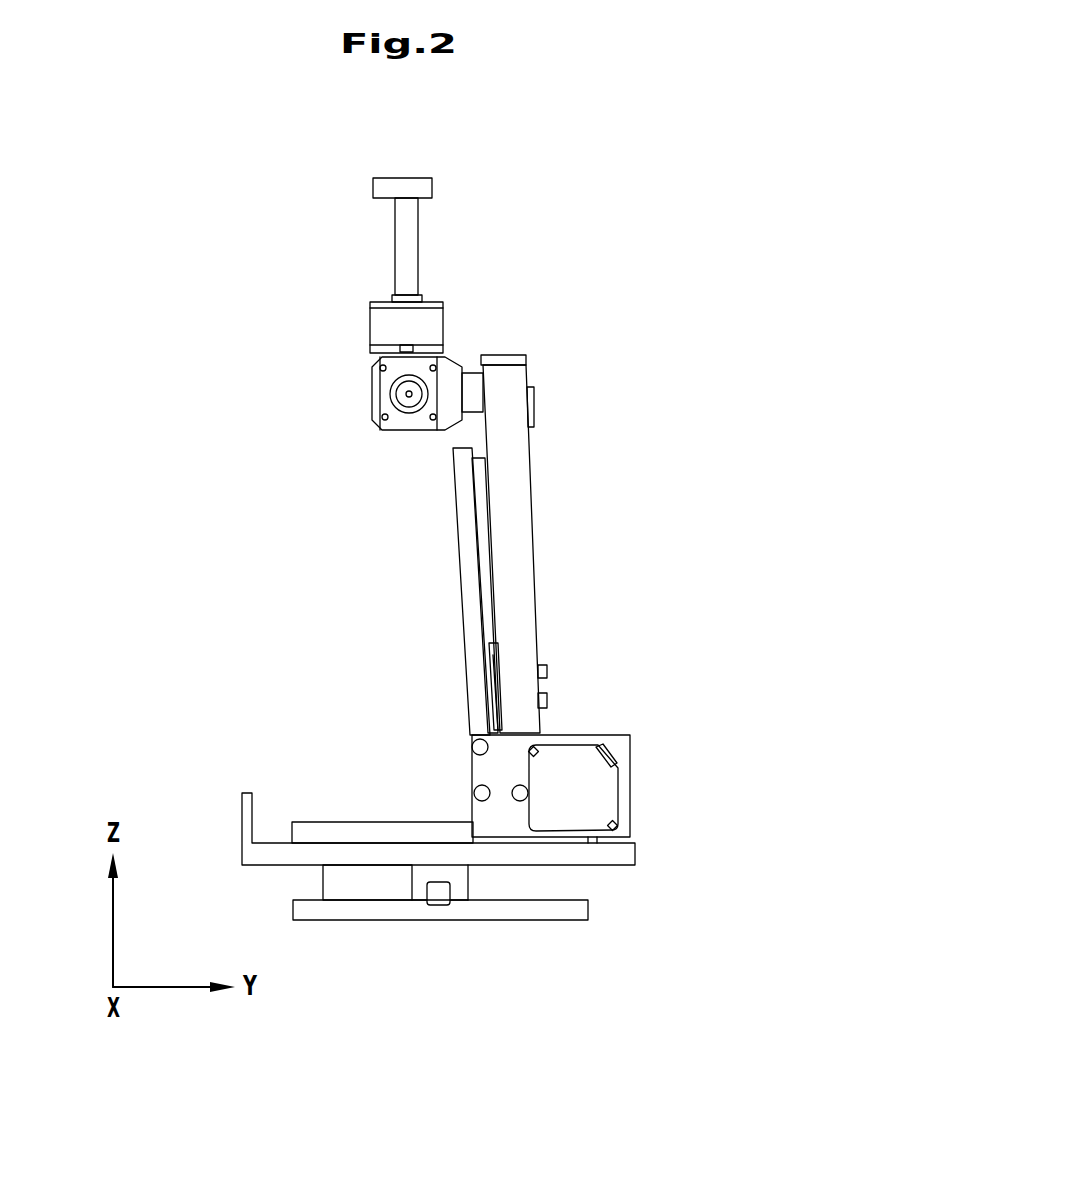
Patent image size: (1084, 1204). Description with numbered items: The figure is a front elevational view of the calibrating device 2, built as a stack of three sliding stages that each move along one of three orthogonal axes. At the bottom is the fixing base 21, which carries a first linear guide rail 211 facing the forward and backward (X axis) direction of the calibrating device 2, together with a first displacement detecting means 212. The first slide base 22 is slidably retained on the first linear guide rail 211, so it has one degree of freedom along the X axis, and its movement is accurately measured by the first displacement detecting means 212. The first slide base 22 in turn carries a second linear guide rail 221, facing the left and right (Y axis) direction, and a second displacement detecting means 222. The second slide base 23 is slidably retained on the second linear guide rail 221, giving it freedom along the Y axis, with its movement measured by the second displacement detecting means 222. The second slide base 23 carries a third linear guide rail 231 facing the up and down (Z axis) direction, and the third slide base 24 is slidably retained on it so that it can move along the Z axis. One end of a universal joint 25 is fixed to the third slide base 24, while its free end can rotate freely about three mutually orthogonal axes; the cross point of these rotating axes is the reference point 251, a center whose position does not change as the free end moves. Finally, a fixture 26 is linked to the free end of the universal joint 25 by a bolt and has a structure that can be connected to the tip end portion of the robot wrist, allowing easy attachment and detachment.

The calibrating device 2 is at (508, 355).
The fixing base 21 is at (570, 907).
The first linear guide rail 211 is at (438, 895).
The first displacement detecting means 212 is at (347, 887).
The first slide base 22 is at (602, 852).
The second linear guide rail 221 is at (398, 828).
The second displacement detecting means 222 is at (573, 762).
The second slide base 23 is at (467, 593).
The third linear guide rail 231 is at (483, 537).
The third slide base 24 is at (507, 412).
The universal joint 25 is at (373, 383).
The reference point 251 is at (403, 400).
The fixture 26 is at (398, 240).